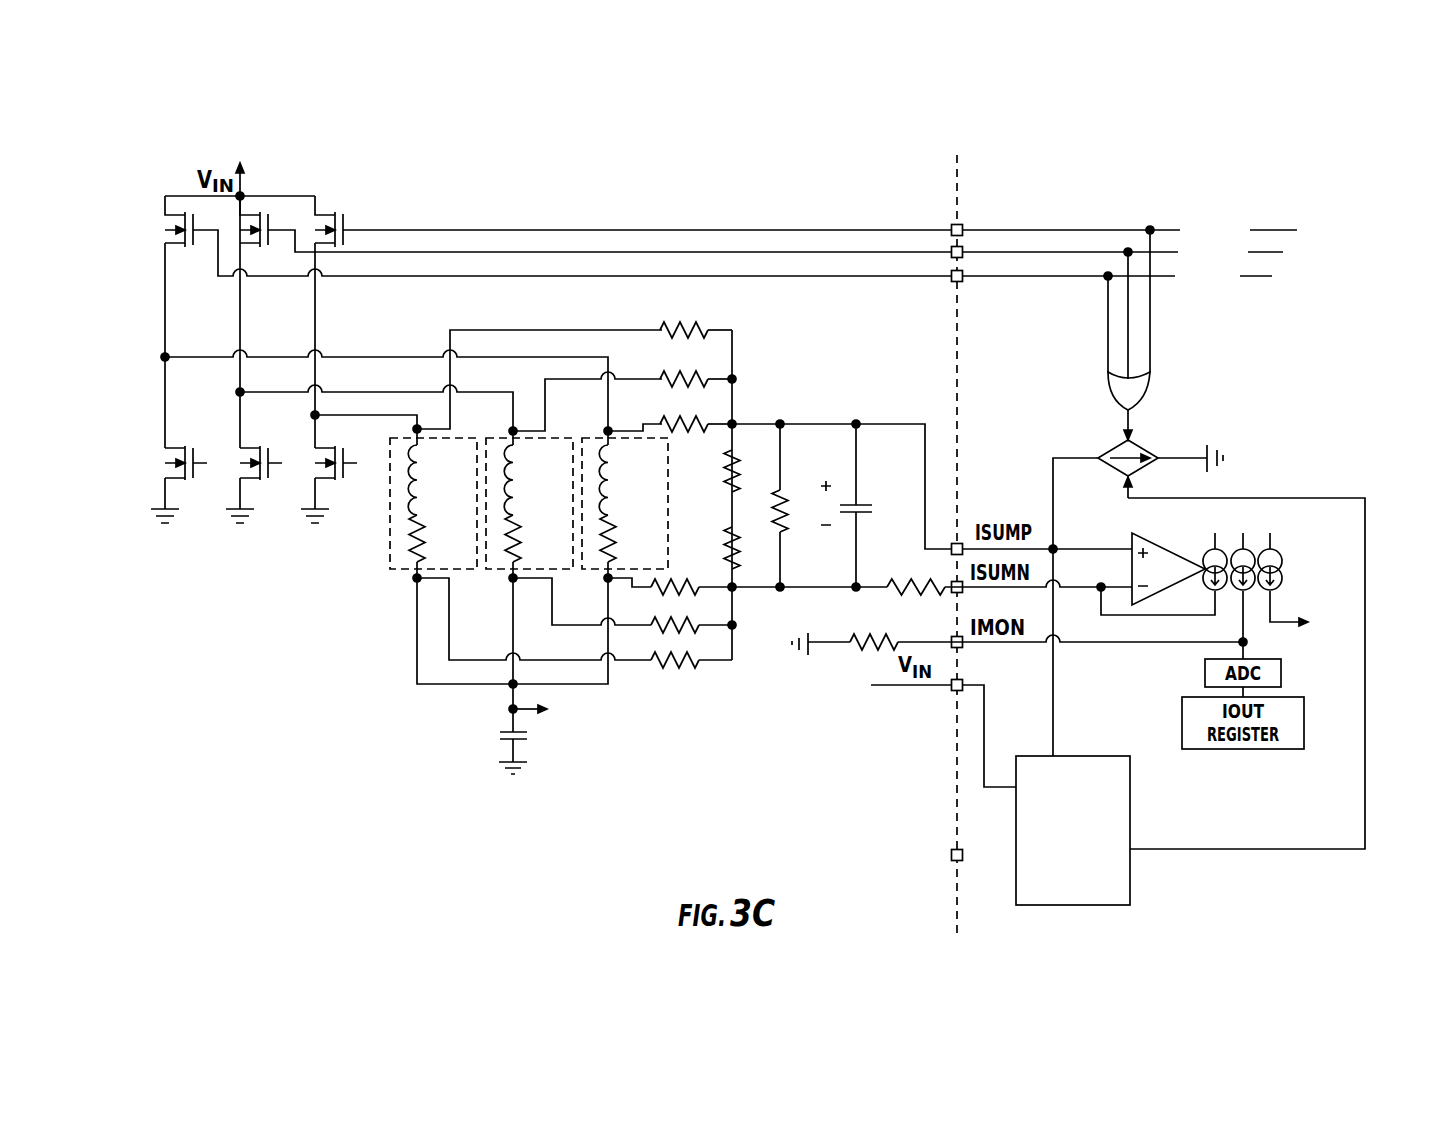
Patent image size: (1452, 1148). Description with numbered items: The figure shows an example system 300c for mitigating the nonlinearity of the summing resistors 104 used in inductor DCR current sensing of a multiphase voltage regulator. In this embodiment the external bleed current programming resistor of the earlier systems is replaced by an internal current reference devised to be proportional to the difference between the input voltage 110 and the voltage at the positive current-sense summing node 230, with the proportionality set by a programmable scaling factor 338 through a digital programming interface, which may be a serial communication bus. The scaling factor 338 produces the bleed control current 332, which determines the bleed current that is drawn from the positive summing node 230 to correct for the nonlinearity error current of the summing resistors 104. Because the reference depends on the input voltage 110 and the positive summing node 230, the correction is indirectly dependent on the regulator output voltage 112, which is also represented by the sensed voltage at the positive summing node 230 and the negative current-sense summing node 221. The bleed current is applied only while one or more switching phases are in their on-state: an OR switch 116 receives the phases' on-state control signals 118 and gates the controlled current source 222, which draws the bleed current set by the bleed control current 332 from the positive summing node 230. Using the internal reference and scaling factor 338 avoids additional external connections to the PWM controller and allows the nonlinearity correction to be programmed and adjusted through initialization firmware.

The example system 300c is at (228, 105).
The summing resistor RSUM 104 is at (657, 397).
The output voltage VOUT 112 is at (577, 730).
The OR switch 116 is at (1108, 392).
The on-state control signal 118 is at (1272, 276).
The ISUMN node 221 is at (947, 583).
The controlled current source 222 is at (1150, 450).
The ISUMP node 230 is at (1057, 549).
The IBLEEDCONTROL 332 is at (1398, 562).
The programmable scaling factor 338 is at (1056, 878).
The input voltage VVIN 110 is at (1030, 716).